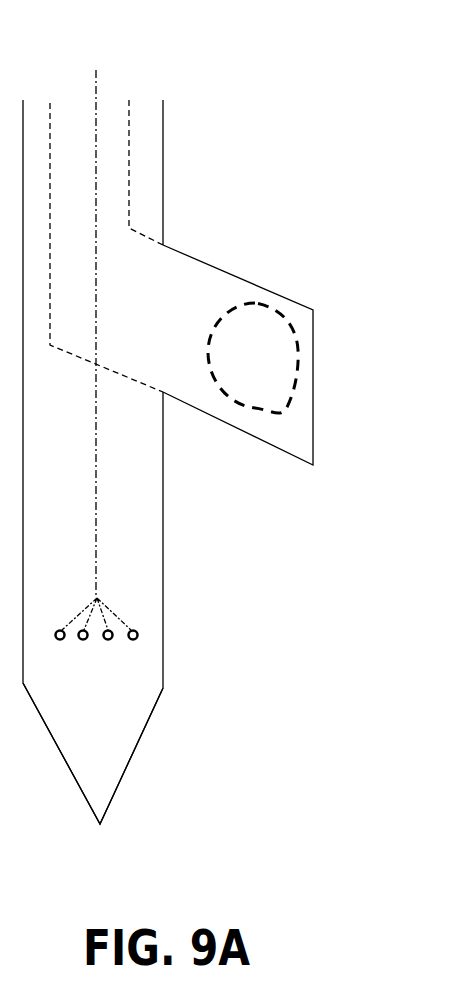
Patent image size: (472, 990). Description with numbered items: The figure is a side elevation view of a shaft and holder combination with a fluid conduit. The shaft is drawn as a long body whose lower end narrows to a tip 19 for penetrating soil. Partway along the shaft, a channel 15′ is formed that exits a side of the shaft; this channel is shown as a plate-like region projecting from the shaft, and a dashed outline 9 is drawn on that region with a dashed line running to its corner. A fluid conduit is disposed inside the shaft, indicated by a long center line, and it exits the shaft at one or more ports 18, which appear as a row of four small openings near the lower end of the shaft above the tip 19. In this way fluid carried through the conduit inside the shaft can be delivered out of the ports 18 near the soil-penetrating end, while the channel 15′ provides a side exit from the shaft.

The channel 15′ is at (198, 260).
The target region 9 is at (313, 310).
The ports 18 is at (66, 638).
The tip 19 is at (103, 826).